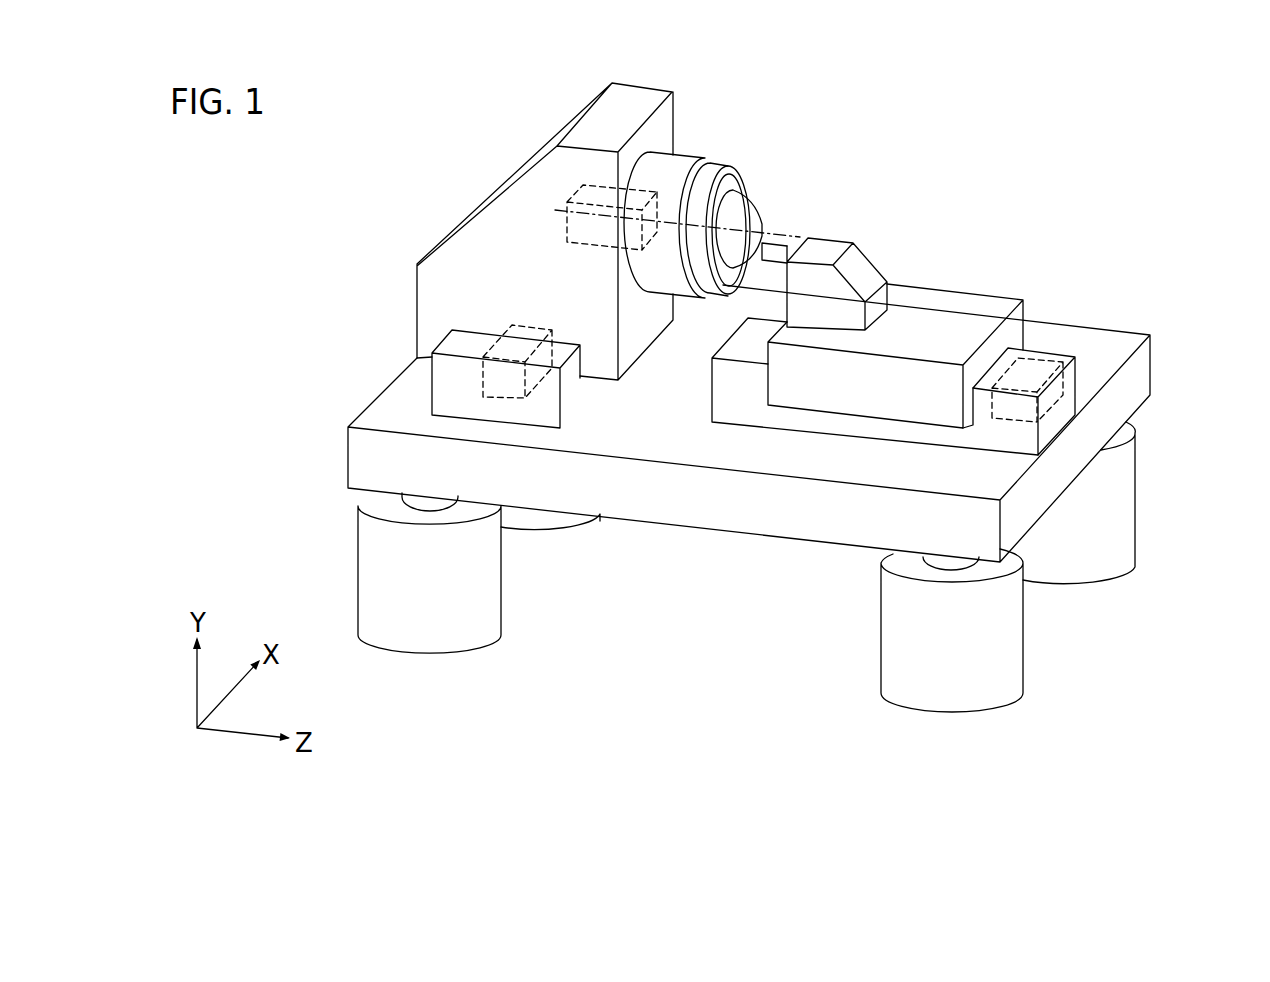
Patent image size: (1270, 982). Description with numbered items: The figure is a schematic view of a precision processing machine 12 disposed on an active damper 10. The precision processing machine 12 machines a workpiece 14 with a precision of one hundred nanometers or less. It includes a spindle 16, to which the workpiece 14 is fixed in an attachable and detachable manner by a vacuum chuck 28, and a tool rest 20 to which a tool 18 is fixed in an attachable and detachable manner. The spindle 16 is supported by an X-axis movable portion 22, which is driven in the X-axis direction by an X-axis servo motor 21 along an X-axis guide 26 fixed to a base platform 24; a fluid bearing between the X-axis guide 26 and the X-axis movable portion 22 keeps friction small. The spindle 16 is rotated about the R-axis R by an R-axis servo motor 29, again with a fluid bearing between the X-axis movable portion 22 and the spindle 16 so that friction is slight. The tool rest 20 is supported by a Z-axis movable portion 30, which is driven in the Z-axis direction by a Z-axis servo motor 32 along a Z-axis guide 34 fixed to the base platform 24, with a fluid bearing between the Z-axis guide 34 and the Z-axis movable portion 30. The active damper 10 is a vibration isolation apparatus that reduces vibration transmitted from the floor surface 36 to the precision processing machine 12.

The active damper 10 is at (1156, 487).
The precision processing machine 12 is at (731, 106).
The workpiece 14 is at (741, 210).
The spindle 16 is at (684, 167).
The tool 18 is at (777, 250).
The tool rest 20 is at (860, 257).
The X-axis servo motor 21 is at (514, 325).
The X-axis movable portion 22 is at (616, 96).
The base platform 24 is at (1086, 330).
The X-axis guide 26 is at (445, 388).
The vacuum chuck 28 is at (725, 175).
The R-axis servo motor 29 is at (592, 237).
The Z-axis movable portion 30 is at (947, 300).
The Z-axis servo motor 32 is at (1012, 406).
The Z-axis guide 34 is at (831, 427).
The floor surface 36 is at (694, 640).
The R-axis R is at (558, 212).